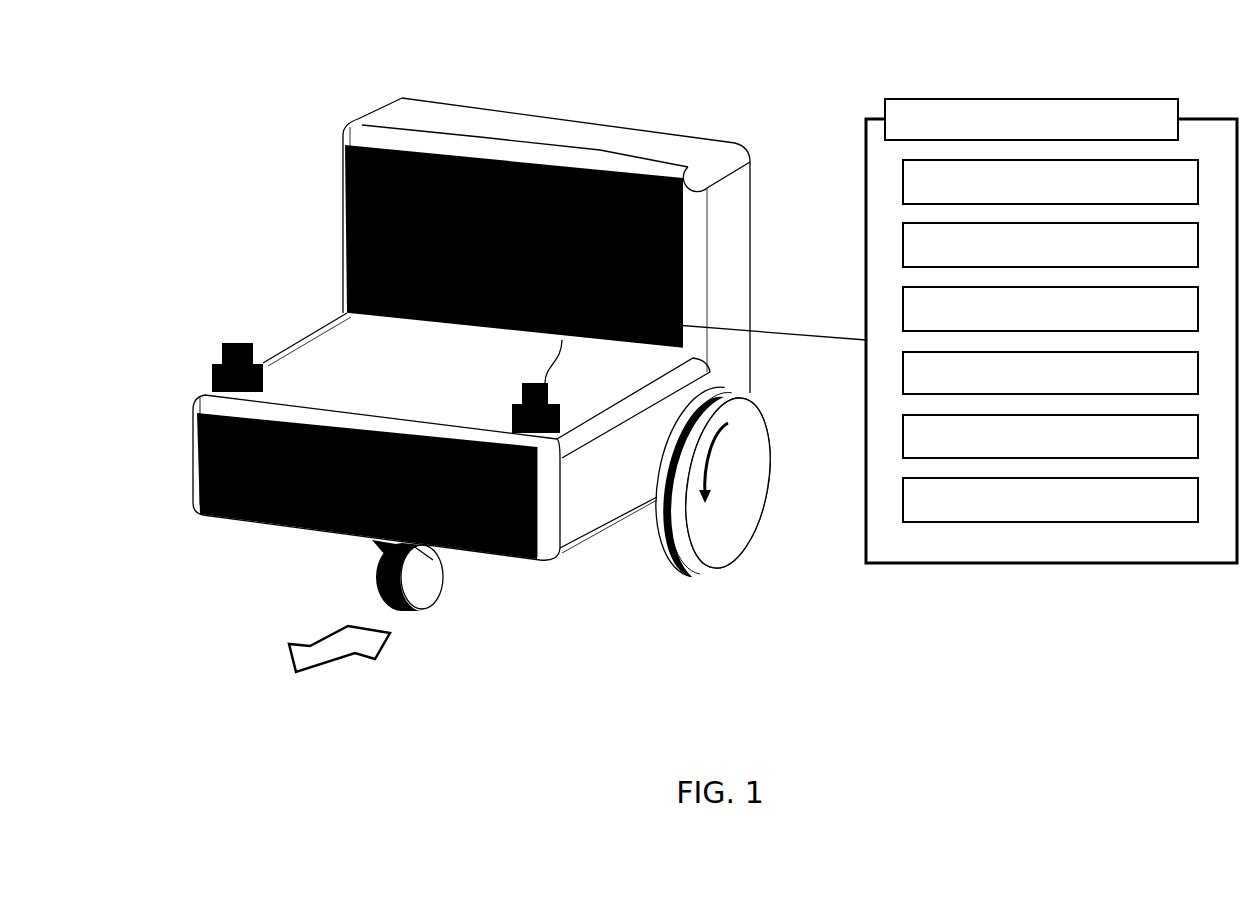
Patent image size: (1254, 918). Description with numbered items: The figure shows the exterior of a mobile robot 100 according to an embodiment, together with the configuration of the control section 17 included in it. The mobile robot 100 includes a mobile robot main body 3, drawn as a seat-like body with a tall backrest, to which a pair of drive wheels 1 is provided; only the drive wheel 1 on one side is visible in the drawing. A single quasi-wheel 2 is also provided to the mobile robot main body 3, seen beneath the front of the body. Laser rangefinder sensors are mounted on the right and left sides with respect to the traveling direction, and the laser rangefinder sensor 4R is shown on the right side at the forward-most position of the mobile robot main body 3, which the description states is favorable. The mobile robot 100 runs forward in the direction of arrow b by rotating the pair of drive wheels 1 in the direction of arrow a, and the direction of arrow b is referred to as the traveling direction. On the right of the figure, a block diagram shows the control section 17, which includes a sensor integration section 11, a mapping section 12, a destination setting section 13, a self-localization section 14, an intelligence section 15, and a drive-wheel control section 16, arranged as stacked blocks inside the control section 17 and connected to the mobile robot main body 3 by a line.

The mobile robot 100 is at (604, 118).
The drive wheel 1 is at (728, 477).
The quasi-wheel 2 is at (423, 573).
The mobile robot main body 3 is at (735, 219).
The laser rangefinder sensor 4R is at (222, 340).
The sensor integration section 11 is at (1050, 182).
The mapping section 12 is at (1050, 245).
The destination setting section 13 is at (1050, 309).
The self-localization section 14 is at (1050, 373).
The intelligence section 15 is at (1050, 436).
The drive-wheel control section 16 is at (1050, 500).
The control section 17 is at (1051, 331).